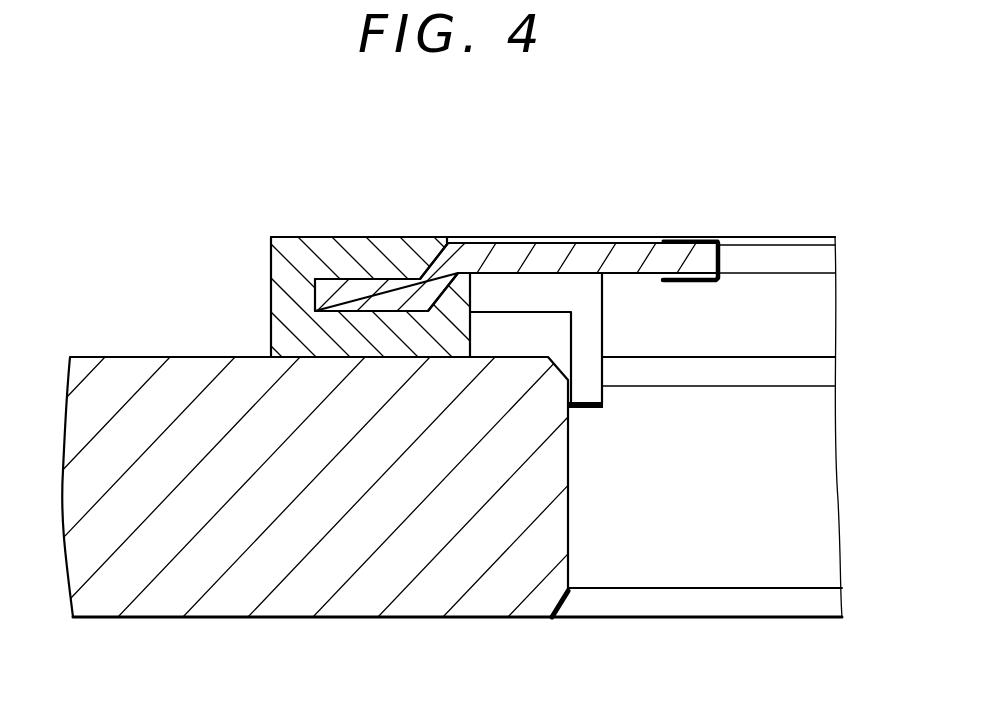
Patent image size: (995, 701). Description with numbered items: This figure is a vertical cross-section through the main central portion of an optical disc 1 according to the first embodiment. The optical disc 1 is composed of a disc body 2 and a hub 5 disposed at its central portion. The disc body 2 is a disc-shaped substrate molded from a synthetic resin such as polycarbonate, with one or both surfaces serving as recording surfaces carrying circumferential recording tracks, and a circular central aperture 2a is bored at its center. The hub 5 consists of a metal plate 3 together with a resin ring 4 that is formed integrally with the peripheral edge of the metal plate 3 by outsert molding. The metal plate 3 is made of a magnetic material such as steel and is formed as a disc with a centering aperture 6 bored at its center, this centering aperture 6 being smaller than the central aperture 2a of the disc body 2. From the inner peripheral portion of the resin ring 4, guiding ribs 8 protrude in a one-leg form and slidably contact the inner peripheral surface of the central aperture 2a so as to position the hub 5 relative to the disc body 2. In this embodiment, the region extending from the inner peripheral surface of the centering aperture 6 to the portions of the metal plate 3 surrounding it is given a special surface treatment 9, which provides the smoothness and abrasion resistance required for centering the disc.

The optical disc 1 is at (193, 279).
The disc body 2 is at (160, 377).
The central aperture 2a is at (567, 548).
The metal plate 3 is at (520, 248).
The resin ring 4 is at (353, 245).
The hub 5 is at (427, 240).
The centering aperture 6 is at (725, 257).
The guiding rib 8 is at (592, 393).
The surface treatment 9 is at (677, 237).